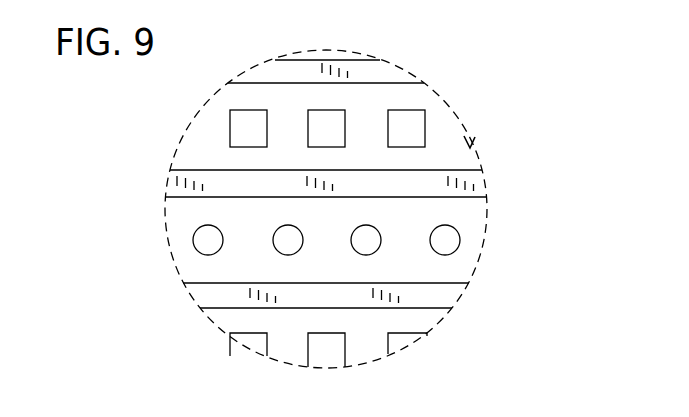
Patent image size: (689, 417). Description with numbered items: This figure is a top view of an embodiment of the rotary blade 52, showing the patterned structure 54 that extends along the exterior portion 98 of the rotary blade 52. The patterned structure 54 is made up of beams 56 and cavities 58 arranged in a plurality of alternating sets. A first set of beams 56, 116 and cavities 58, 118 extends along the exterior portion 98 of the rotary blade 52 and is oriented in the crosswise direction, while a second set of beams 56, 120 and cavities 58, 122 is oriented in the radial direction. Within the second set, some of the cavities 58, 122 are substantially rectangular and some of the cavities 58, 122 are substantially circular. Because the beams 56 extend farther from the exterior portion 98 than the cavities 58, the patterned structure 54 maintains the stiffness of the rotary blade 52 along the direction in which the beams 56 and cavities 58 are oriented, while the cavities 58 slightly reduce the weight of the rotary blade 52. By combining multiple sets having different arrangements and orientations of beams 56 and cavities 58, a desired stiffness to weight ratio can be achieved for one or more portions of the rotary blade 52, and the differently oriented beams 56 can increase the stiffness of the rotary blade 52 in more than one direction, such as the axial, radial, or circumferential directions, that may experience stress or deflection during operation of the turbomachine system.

The rotary blade 52 is at (490, 76).
The patterned structure 54 is at (513, 108).
The beams 56 is at (304, 180).
The cavities 58 is at (330, 205).
The exterior portion 98 is at (510, 205).
The first set of beams 116 is at (262, 72).
The first set of cavities 118 is at (460, 156).
The second set of beams 120 is at (362, 124).
The second set of cavities 122 is at (413, 118).